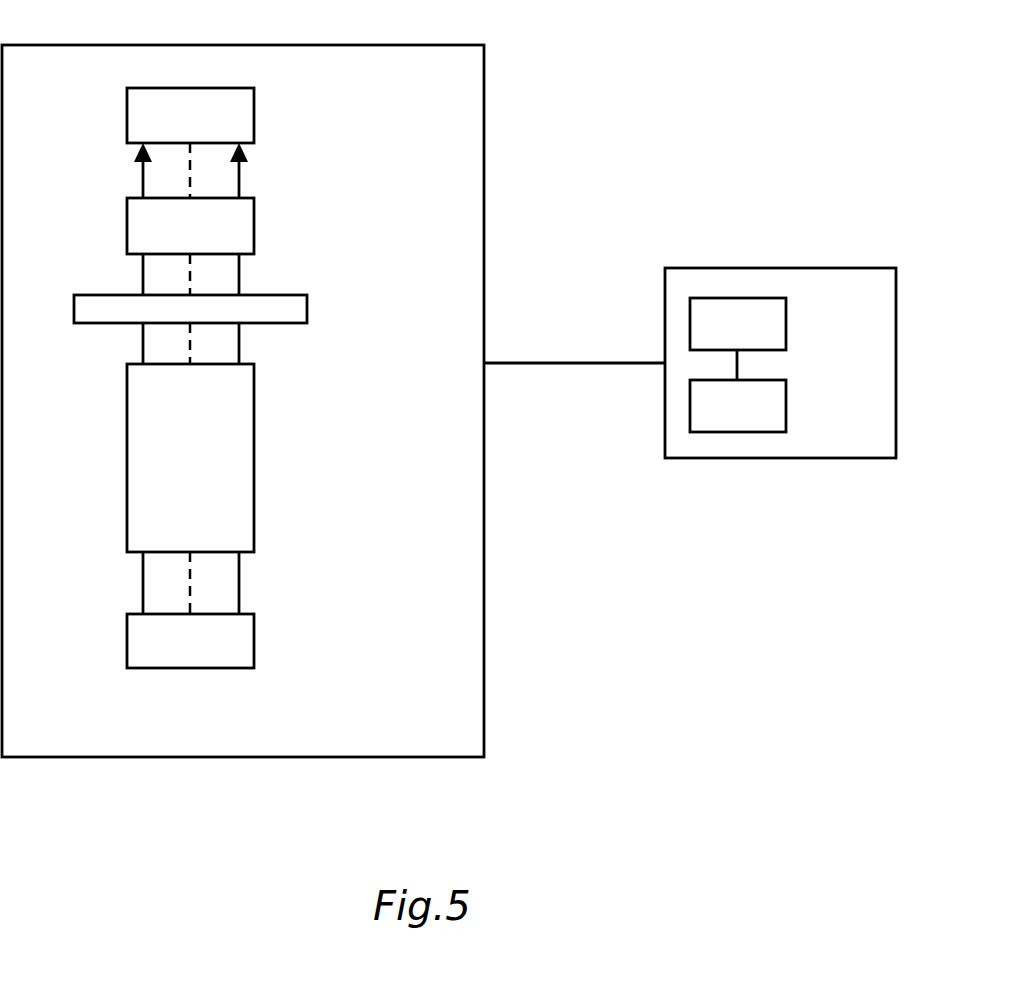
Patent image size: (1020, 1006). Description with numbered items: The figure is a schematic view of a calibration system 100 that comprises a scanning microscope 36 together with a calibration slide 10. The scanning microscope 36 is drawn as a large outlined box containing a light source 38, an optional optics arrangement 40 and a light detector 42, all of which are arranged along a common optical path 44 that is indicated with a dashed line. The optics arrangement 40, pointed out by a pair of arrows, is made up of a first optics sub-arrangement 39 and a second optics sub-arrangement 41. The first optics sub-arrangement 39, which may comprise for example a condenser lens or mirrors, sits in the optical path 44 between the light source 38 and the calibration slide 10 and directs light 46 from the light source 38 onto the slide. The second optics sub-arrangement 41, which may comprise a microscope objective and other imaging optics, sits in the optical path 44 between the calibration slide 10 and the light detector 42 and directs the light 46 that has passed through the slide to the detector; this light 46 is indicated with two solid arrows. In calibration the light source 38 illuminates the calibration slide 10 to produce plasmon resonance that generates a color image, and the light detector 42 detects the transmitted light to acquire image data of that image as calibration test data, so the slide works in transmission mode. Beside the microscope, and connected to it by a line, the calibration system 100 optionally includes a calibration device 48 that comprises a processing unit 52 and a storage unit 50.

The calibration system 100 is at (762, 100).
The scanning microscope 36 is at (484, 137).
The light detector 42 is at (254, 118).
The second optics sub-arrangement 41 is at (254, 228).
The light 46 is at (143, 345).
The calibration slide 10 is at (307, 307).
The first optics sub-arrangement 39 is at (254, 464).
The optical path 44 is at (190, 579).
The light source 38 is at (254, 638).
The optics arrangement 40 is at (389, 232).
The calibration device 48 is at (813, 268).
The processing unit 52 is at (786, 322).
The storage unit 50 is at (786, 403).